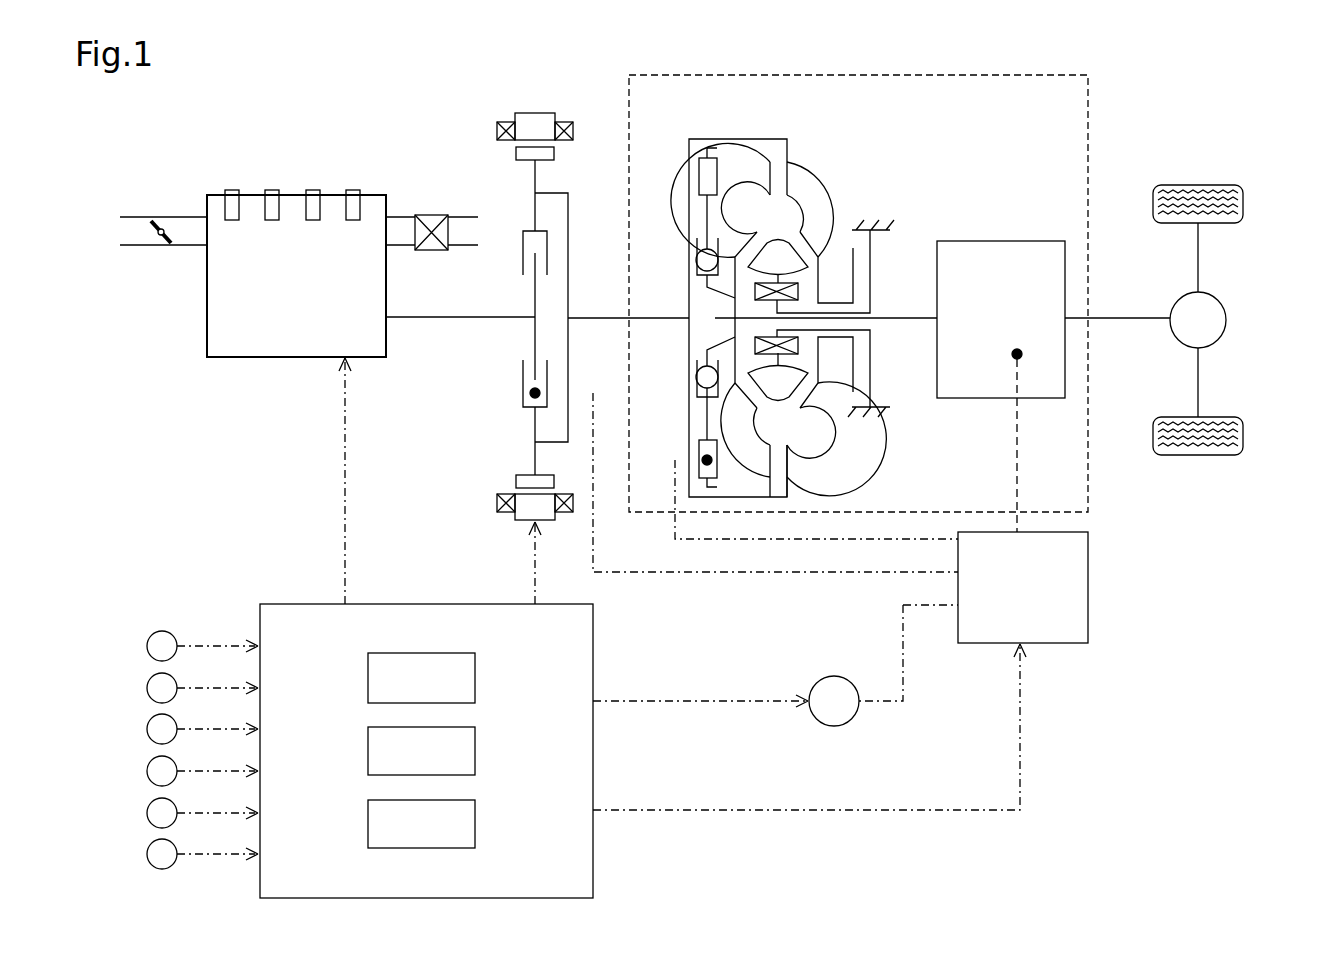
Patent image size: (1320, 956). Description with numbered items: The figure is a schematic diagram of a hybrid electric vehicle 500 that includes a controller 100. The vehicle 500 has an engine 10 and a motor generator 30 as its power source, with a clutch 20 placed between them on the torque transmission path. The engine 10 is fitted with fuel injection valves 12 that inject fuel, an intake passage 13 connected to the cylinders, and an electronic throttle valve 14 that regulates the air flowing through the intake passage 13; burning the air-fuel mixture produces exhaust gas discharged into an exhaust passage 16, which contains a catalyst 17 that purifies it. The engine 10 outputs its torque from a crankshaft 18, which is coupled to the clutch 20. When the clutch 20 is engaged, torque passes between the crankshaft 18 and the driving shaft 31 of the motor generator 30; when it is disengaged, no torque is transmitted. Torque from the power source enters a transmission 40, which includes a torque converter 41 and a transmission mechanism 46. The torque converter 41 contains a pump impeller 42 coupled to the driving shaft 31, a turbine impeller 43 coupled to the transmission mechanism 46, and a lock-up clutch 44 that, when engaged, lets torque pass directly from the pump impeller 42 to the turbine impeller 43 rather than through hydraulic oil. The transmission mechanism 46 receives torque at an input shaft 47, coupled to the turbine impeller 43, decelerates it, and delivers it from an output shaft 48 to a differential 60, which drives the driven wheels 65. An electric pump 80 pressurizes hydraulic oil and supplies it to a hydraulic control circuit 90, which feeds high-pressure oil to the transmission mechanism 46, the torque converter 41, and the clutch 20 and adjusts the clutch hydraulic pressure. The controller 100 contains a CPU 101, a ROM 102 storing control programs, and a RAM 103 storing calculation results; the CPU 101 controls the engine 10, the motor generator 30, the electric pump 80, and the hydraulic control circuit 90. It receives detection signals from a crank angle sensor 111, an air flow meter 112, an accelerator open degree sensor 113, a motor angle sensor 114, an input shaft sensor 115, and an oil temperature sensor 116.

The engine 10 is at (186, 339).
The fuel injection valves 12 is at (353, 188).
The intake passage 13 is at (133, 215).
The electronic throttle valve 14 is at (162, 212).
The exhaust passage 16 is at (396, 214).
The catalyst 17 is at (433, 214).
The crankshaft 18 is at (492, 318).
The clutch 20 is at (523, 255).
The motor generator 30 is at (535, 112).
The driving shaft 31 is at (584, 316).
The transmission 40 is at (629, 75).
The torque converter 41 is at (778, 138).
The pump impeller 42 is at (833, 443).
The turbine impeller 43 is at (752, 458).
The lock-up clutch 44 is at (699, 177).
The transmission mechanism 46 is at (1002, 240).
The input shaft 47 is at (899, 316).
The output shaft 48 is at (1076, 317).
The differential 60 is at (1227, 321).
The driven wheels 65 is at (1268, 440).
The electric pump 80 is at (813, 688).
The hydraulic control circuit 90 is at (1088, 533).
The controller 100 is at (401, 603).
The CPU 101 is at (368, 690).
The ROM 102 is at (368, 760).
The RAM 103 is at (368, 835).
The crank angle sensor 111 is at (147, 650).
The air flow meter 112 is at (147, 692).
The accelerator open degree sensor 113 is at (147, 733).
The motor angle sensor 114 is at (147, 775).
The input shaft sensor 115 is at (147, 817).
The oil temperature sensor 116 is at (147, 858).
The hybrid electric vehicle 500 is at (1112, 155).